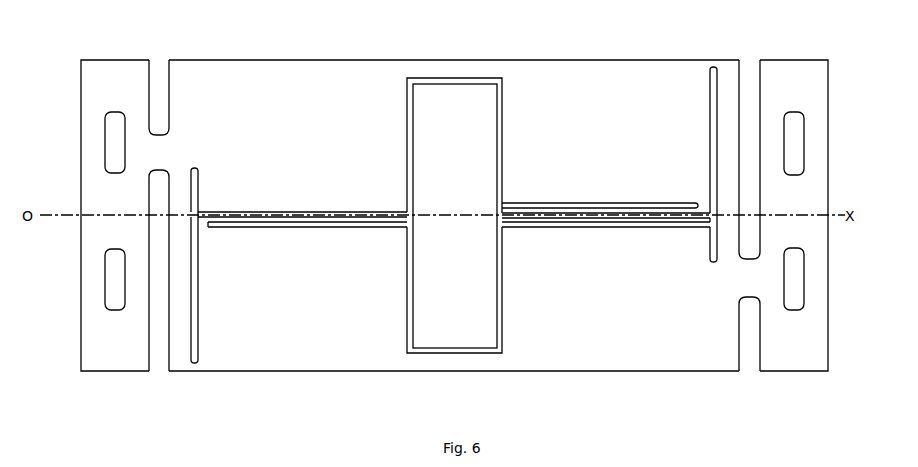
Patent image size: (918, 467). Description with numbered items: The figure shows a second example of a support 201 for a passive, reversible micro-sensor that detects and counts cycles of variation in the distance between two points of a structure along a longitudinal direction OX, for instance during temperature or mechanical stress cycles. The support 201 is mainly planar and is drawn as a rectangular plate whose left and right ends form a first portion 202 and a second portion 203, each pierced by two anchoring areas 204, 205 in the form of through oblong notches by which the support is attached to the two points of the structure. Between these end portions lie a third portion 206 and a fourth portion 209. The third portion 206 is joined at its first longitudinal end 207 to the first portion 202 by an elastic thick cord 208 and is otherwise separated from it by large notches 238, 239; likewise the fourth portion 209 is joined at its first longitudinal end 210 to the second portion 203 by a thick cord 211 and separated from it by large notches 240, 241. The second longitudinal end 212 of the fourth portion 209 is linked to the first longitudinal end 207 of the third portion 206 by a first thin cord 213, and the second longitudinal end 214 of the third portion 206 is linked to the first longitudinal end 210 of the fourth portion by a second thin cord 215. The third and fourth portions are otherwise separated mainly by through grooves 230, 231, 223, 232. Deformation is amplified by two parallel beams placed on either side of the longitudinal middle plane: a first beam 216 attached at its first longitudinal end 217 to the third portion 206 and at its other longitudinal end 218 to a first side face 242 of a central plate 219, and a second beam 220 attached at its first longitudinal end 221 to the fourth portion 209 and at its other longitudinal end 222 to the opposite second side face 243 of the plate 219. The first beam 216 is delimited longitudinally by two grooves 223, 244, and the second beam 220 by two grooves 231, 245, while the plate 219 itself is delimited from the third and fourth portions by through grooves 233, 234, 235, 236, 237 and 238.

The support 201 is at (537, 58).
The first portion 202 is at (108, 195).
The second portion 203 is at (790, 190).
The anchoring areas 204 is at (108, 144).
The anchoring areas 205 is at (793, 140).
The third portion 206 is at (290, 58).
The first longitudinal end 207 is at (174, 128).
The thick cord 208 is at (158, 150).
The fourth portion 209 is at (568, 350).
The first longitudinal end 210 is at (740, 305).
The thick cord 211 is at (750, 270).
The second longitudinal end 212 is at (196, 362).
The first thin cord 213 is at (194, 365).
The second longitudinal end 214 is at (708, 82).
The second thin cord 215 is at (715, 64).
The first beam 216 is at (596, 207).
The first longitudinal end 217 is at (700, 207).
The other longitudinal end 218 is at (502, 212).
The plate 219 is at (475, 148).
The second beam 220 is at (355, 227).
The first longitudinal end 221 is at (210, 225).
The other longitudinal end 222 is at (404, 211).
The groove 223 is at (645, 228).
The through groove 230 is at (198, 300).
The groove 231 is at (250, 212).
The through groove 232 is at (710, 150).
The through groove 233 is at (407, 135).
The through groove 234 is at (453, 73).
The through groove 235 is at (500, 85).
The through groove 236 is at (498, 290).
The through groove 237 is at (462, 355).
The large notch 238 is at (157, 78).
The large notch 239 is at (157, 340).
The large notch 240 is at (748, 90).
The large notch 241 is at (748, 335).
The first side face 242 is at (498, 248).
The second side face 243 is at (410, 260).
The groove 244 is at (562, 202).
The groove 245 is at (274, 228).